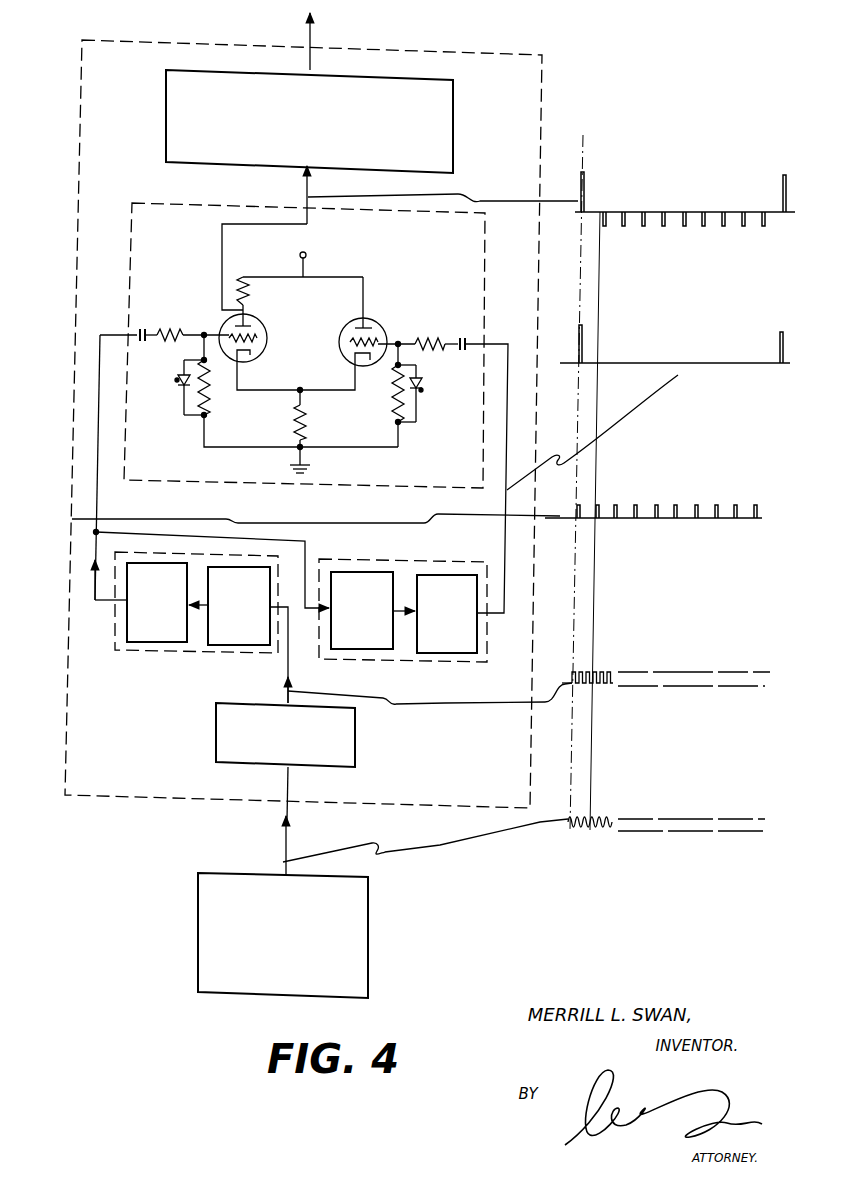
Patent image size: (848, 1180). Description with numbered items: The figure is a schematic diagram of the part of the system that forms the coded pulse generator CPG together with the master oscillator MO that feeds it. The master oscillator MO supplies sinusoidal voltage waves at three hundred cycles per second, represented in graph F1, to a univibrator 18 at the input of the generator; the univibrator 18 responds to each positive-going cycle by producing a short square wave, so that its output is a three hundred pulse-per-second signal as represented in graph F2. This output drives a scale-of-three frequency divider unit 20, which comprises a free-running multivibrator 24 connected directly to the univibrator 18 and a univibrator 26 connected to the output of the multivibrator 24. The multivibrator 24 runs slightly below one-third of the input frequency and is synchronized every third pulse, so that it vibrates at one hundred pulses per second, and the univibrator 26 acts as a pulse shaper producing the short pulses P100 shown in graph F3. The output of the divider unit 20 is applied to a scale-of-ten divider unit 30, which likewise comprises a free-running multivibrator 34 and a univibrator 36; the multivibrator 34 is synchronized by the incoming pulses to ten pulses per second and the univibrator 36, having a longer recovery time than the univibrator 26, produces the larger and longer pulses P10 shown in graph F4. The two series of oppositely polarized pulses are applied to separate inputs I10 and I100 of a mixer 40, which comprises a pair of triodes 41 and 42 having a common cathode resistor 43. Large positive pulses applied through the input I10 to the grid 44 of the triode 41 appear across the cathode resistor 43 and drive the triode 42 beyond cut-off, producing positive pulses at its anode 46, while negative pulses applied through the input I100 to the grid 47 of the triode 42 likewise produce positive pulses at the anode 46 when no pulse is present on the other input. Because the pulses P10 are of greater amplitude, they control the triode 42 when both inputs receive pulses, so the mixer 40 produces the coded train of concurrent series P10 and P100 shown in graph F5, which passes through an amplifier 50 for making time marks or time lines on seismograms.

The coded pulse generator CPG is at (70, 519).
The amplifier 50 is at (166, 118).
The mixer 40 is at (132, 261).
The triode 42 is at (244, 328).
The anode 46 is at (236, 322).
The grid 47 is at (233, 337).
The triode 41 is at (386, 332).
The grid 44 is at (376, 342).
The common cathode resistor 43 is at (306, 434).
The input I100 is at (153, 457).
The input I10 is at (444, 470).
The scale-of-three frequency divider unit 20 is at (196, 619).
The univibrator 26 is at (157, 602).
The free-running multivibrator 24 is at (239, 606).
The scale-of-ten divider unit 30 is at (403, 625).
The free-running multivibrator 34 is at (362, 610).
The univibrator 36 is at (447, 614).
The univibrator 18 is at (355, 752).
The master oscillator MO is at (368, 948).
The graph F1 is at (728, 820).
The graph F2 is at (678, 669).
The graph F3 is at (607, 503).
The graph F4 is at (720, 365).
The graph F5 is at (685, 205).
The low-frequency pulses P10 is at (586, 190).
The high-frequency pulses P100 is at (605, 222).